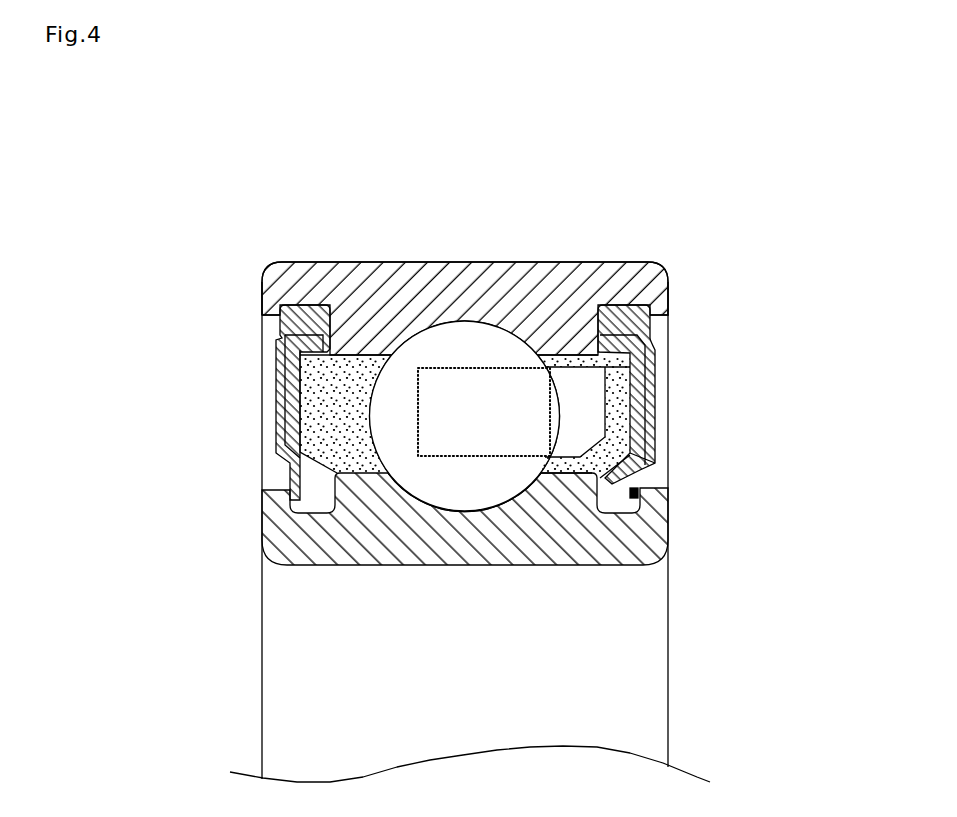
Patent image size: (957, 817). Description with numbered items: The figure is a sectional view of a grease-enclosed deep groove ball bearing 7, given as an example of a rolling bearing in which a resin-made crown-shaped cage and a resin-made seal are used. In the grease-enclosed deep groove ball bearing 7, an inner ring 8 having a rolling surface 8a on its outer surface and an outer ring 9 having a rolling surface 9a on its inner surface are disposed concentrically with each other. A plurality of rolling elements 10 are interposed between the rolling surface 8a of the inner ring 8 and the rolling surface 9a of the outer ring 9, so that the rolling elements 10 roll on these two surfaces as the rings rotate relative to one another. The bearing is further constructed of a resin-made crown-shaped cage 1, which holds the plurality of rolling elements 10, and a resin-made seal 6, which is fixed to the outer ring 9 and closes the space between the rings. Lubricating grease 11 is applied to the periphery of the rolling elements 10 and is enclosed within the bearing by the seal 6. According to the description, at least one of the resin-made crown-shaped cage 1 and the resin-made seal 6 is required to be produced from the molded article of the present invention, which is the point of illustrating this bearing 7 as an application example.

The resin-made crown-shaped cage 1 is at (585, 430).
The resin-made seal 6 is at (278, 375).
The grease-enclosed deep groove ball bearing 7 is at (724, 268).
The inner ring 8 is at (618, 533).
The rolling surface 8a is at (462, 508).
The outer ring 9 is at (563, 289).
The rolling surface 9a is at (481, 318).
The rolling elements 10 is at (425, 349).
The lubricating grease 11 is at (313, 415).